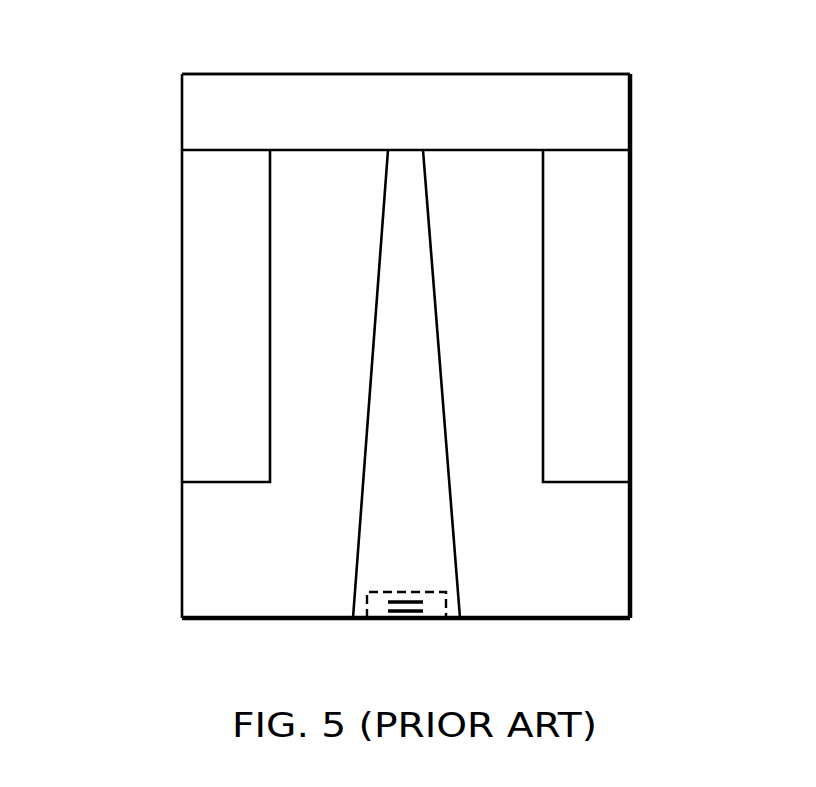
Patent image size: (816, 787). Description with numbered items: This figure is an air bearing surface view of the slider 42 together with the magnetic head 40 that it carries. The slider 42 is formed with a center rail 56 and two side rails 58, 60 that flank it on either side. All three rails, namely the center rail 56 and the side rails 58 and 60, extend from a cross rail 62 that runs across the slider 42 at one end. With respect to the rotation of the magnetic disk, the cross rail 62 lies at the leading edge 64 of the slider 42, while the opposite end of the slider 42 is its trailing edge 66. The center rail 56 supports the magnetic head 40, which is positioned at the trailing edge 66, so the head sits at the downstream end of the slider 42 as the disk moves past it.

The magnetic head 40 is at (378, 622).
The slider 42 is at (168, 564).
The center rail 56 is at (392, 263).
The side rail 58 is at (196, 223).
The side rail 60 is at (603, 223).
The cross rail 62 is at (316, 81).
The leading edge 64 is at (473, 73).
The trailing edge 66 is at (527, 622).